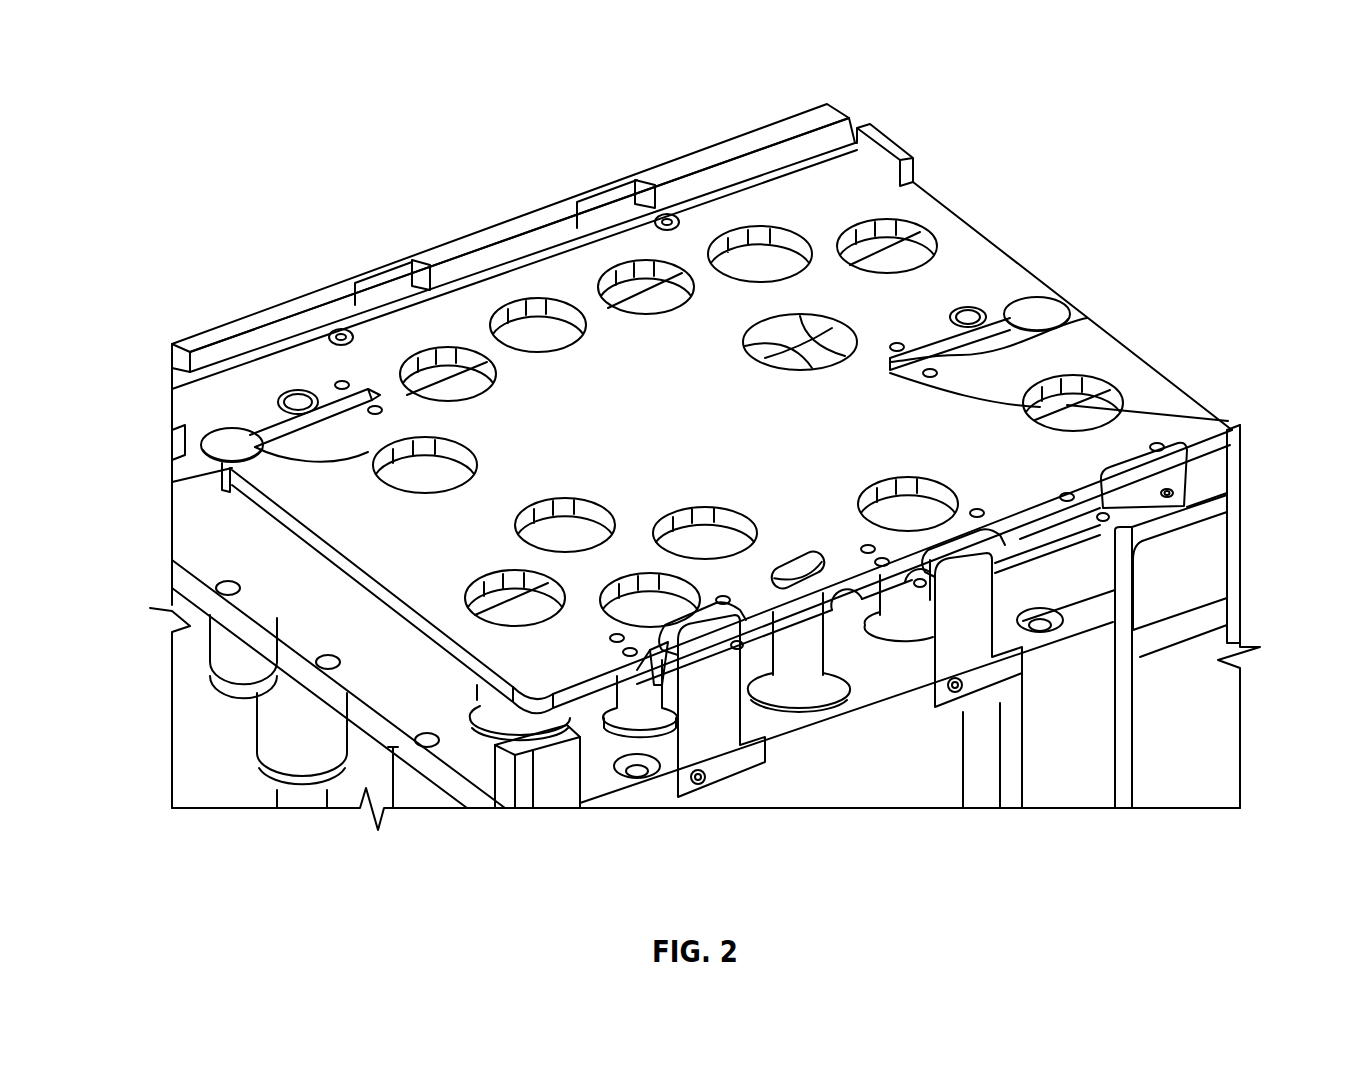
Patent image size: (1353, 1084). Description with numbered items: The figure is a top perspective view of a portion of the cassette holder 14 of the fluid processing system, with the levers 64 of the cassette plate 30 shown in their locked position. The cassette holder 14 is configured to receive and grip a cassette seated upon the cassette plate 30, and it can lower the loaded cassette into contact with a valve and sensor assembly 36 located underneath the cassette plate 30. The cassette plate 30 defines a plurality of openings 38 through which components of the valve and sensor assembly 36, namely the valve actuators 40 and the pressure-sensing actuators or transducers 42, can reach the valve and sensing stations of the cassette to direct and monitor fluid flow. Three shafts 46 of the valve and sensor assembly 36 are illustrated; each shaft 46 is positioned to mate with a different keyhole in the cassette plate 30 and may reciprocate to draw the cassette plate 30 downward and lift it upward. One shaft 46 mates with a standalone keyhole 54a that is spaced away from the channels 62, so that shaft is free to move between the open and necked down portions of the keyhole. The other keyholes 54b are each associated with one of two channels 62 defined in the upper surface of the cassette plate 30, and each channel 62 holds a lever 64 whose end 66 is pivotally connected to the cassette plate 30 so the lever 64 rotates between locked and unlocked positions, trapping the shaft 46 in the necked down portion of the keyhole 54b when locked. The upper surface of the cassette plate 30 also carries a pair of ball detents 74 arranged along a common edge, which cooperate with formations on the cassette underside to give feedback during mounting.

The cassette holder 14 is at (1222, 690).
The cassette plate 30 is at (410, 637).
The valve and sensor assembly 36 is at (625, 738).
The openings 38 is at (615, 262).
The valve actuators 40 is at (905, 628).
The pressure-sensing actuators or transducers 42 is at (470, 606).
The shaft 46 is at (775, 700).
The standalone keyhole 54a is at (838, 567).
The keyhole 54b is at (953, 312).
The channel 62 is at (1230, 421).
The lever 64 is at (1050, 305).
The end of lever 66 is at (1090, 320).
The ball detents 74 is at (668, 213).